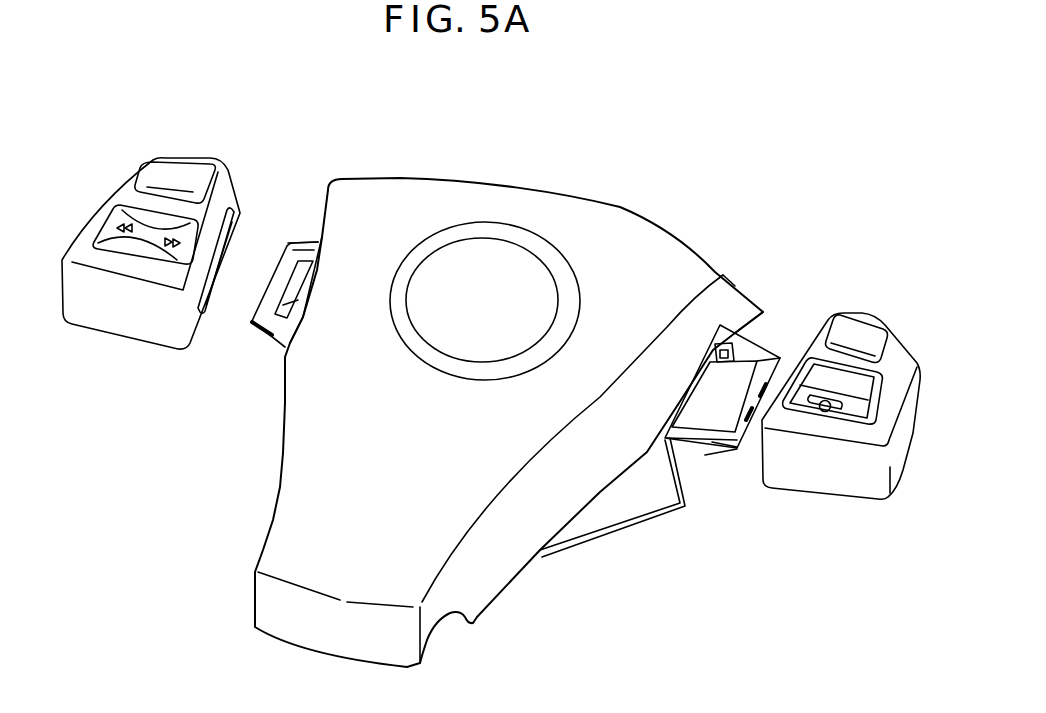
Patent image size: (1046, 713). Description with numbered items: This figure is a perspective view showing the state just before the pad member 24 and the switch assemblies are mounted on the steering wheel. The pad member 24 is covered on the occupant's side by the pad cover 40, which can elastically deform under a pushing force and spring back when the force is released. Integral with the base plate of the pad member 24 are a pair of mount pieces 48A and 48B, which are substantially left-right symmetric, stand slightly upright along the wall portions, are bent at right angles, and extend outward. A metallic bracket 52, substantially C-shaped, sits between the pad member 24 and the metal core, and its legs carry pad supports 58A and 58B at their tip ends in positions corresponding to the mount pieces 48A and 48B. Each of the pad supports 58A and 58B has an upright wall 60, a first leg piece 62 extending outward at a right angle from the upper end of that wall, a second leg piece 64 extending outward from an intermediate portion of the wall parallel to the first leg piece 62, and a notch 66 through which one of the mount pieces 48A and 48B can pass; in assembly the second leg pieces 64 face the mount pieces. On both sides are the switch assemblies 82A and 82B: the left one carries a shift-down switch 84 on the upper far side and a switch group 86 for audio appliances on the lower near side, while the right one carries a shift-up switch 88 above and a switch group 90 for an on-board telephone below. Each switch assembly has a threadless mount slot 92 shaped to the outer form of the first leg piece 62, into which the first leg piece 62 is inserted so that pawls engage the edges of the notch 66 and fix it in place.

The pad member 24 is at (543, 176).
The pad cover 40 is at (593, 218).
The mount piece 48A is at (290, 300).
The mount piece 48B is at (733, 347).
The bracket 52 is at (617, 530).
The pad support 58A is at (271, 251).
The pad support 58B is at (777, 358).
The upright wall 60 is at (687, 477).
The first leg piece 62 is at (779, 333).
The second leg piece 64 is at (718, 460).
The notch 66 is at (723, 275).
The switch assembly 82A is at (171, 137).
The switch assembly 82B is at (873, 307).
The shift-down switch 84 is at (153, 176).
The switch group 86 is at (132, 276).
The shift-up switch 88 is at (873, 330).
The switch group 90 is at (842, 430).
The mount slot 92 is at (223, 250).